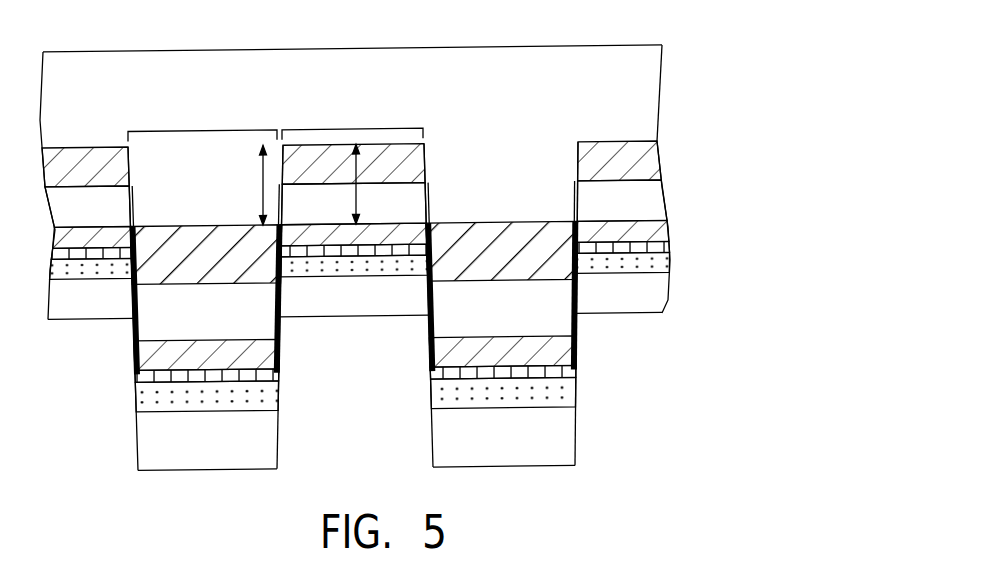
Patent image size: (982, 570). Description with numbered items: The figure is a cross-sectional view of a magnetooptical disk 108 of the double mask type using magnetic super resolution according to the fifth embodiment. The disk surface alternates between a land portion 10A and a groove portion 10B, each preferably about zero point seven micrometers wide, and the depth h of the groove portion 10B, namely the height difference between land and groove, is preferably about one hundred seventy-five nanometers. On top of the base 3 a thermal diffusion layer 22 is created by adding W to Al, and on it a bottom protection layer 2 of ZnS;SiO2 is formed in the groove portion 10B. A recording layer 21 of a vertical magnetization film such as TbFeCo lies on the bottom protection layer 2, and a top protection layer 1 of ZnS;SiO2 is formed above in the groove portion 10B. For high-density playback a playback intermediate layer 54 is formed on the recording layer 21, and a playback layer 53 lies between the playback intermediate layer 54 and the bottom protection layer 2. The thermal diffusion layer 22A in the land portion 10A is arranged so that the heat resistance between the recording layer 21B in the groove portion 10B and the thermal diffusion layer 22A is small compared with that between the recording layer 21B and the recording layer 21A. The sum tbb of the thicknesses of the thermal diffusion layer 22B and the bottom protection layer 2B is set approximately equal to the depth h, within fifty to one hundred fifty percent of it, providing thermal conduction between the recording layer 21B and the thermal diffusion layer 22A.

The top protection layer 1 is at (657, 305).
The bottom protection layer 2 is at (662, 192).
The base 3 is at (645, 88).
The recording layer 21 is at (667, 227).
The thermal diffusion layer 22 is at (650, 157).
The playback layer 53 is at (662, 265).
The playback intermediate layer 54 is at (662, 247).
The magnetooptical disk 108 is at (734, 65).
The land portion 10A is at (198, 130).
The groove portion 10B is at (350, 130).
The recording layer in land portion 21A is at (262, 361).
The recording layer in groove portion 21B is at (400, 232).
The thermal diffusion layer in land portion 22A is at (198, 236).
The thermal diffusion layer in groove portion 22B is at (418, 163).
The bottom protection layer in groove portion 2B is at (413, 193).
The depth of groove portion h is at (256, 185).
The sum of film thickness tbb is at (375, 184).